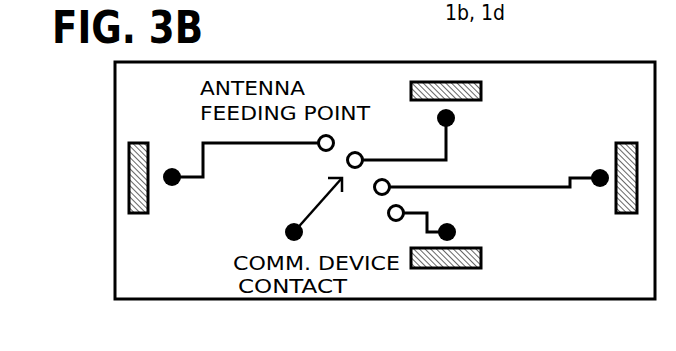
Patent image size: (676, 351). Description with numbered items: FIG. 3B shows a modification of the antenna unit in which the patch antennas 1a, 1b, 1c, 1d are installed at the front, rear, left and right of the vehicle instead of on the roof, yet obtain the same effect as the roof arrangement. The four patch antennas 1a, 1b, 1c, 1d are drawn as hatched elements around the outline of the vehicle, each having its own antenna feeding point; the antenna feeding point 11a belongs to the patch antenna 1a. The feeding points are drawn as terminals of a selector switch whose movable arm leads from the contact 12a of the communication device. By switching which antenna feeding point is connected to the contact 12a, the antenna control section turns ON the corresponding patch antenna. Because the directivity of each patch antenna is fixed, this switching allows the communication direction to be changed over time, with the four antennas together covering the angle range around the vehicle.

The patch antenna 1a is at (150, 203).
The patch antenna 1b is at (485, 91).
The patch antenna 1c is at (623, 143).
The patch antenna 1d is at (485, 257).
The antenna feeding point 11a is at (170, 168).
The contact of the communication device 12a is at (285, 236).